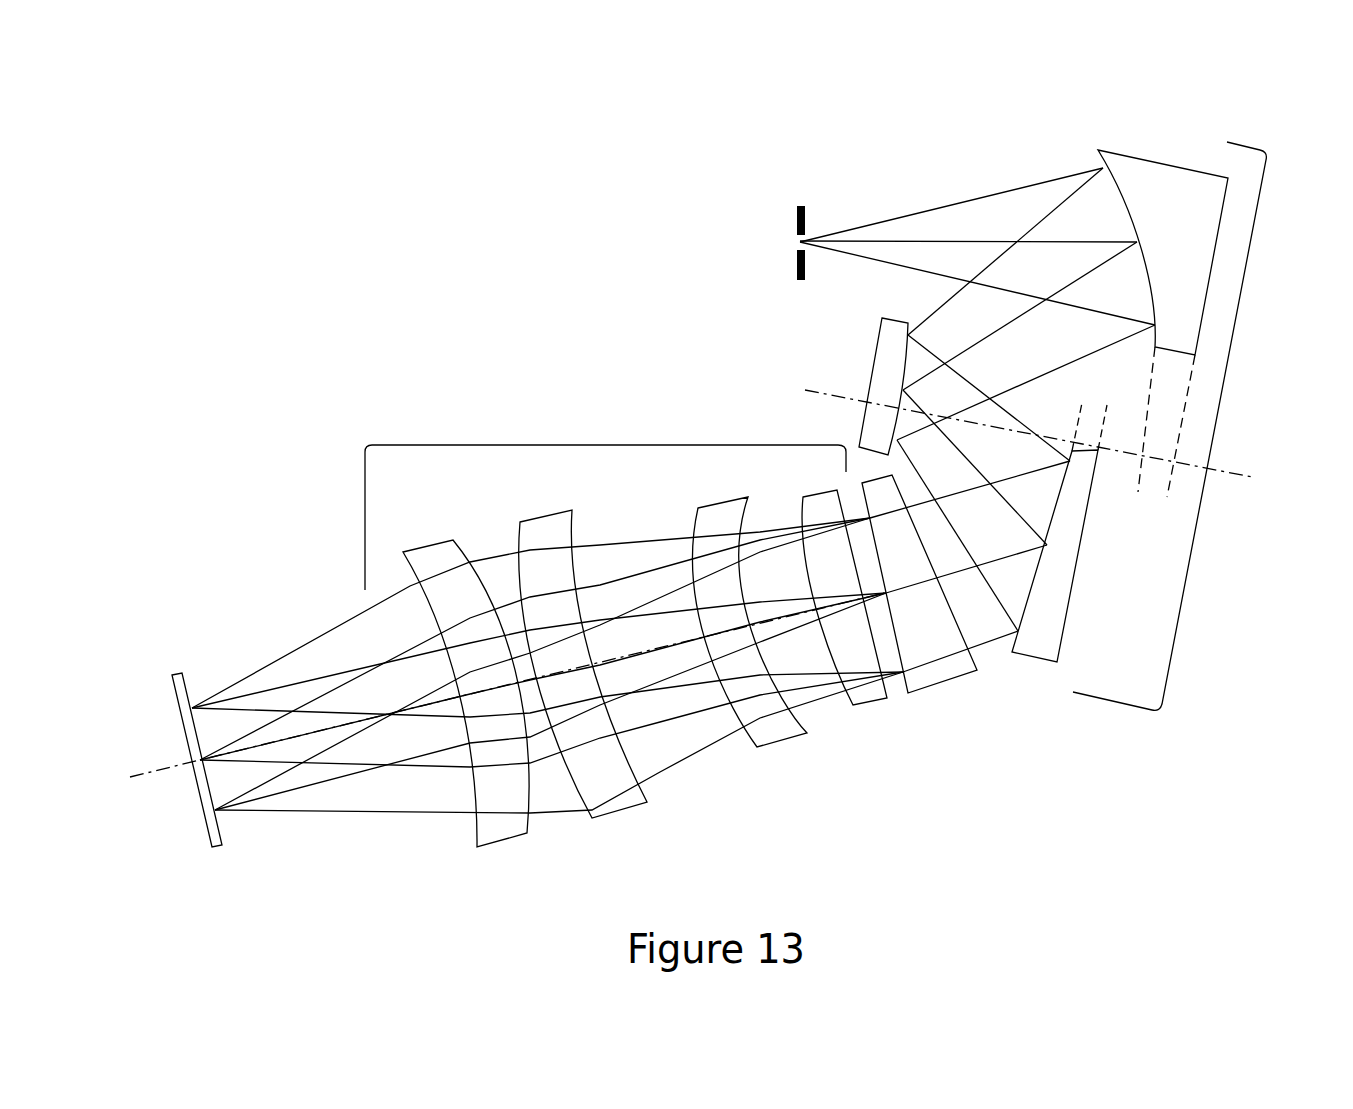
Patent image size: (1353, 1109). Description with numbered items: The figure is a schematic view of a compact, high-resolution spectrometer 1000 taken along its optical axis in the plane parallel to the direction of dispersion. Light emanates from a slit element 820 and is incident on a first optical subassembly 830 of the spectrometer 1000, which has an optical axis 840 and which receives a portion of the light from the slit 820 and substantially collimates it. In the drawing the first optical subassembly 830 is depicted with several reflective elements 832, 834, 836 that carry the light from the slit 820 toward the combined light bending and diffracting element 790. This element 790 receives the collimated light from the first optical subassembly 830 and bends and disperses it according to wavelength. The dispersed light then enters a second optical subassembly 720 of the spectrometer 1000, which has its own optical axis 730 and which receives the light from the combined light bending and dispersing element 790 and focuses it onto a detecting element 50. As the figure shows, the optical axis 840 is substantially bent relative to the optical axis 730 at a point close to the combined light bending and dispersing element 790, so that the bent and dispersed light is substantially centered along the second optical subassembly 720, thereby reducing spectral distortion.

The spectrometer 1000 is at (196, 143).
The detecting element 50 is at (174, 702).
The optical axis 730 is at (160, 772).
The second optical subassembly 720 is at (606, 445).
The combined light bending and diffracting element 790 is at (938, 684).
The mirror 836 is at (1070, 596).
The mirror 834 is at (877, 347).
The curved mirror 832 is at (1168, 163).
The first optical subassembly 830 is at (1229, 370).
The optical axis 840 is at (1268, 481).
The slit element 820 is at (796, 252).